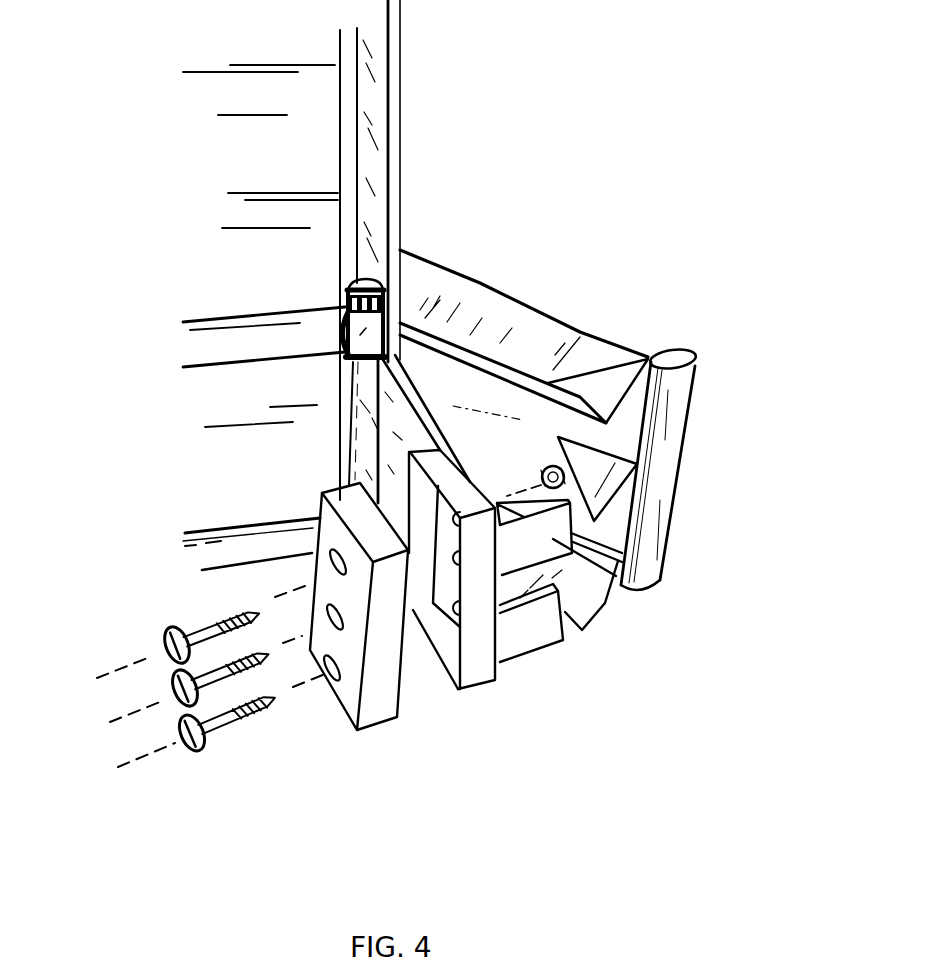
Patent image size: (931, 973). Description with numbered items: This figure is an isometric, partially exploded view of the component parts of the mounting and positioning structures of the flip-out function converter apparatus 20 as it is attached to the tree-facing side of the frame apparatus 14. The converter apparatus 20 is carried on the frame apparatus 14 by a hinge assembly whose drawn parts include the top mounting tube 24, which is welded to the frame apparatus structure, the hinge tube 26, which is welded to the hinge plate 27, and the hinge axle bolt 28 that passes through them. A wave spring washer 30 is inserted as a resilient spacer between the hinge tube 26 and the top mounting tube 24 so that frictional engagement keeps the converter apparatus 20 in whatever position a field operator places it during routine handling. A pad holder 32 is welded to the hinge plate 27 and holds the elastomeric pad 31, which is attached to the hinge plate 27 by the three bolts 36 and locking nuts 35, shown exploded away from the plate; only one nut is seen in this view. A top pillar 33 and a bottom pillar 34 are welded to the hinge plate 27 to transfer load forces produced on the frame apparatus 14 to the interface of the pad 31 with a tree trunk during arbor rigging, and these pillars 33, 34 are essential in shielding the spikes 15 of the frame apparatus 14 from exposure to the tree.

The frame apparatus 14 is at (478, 245).
The spikes 15 is at (643, 388).
The flip-out function converter apparatus 20 is at (522, 735).
The top mounting tube 24 is at (342, 334).
The hinge tube 26 is at (362, 440).
The hinge plate 27 is at (417, 400).
The hinge axle bolt 28 is at (350, 283).
The wave spring washer 30 is at (346, 361).
The elastomeric pad 31 is at (377, 705).
The pad holder 32 is at (468, 675).
The top pillar 33 is at (622, 588).
The bottom pillar 34 is at (532, 633).
The locking nuts 35 is at (542, 468).
The bolts 36 is at (165, 645).